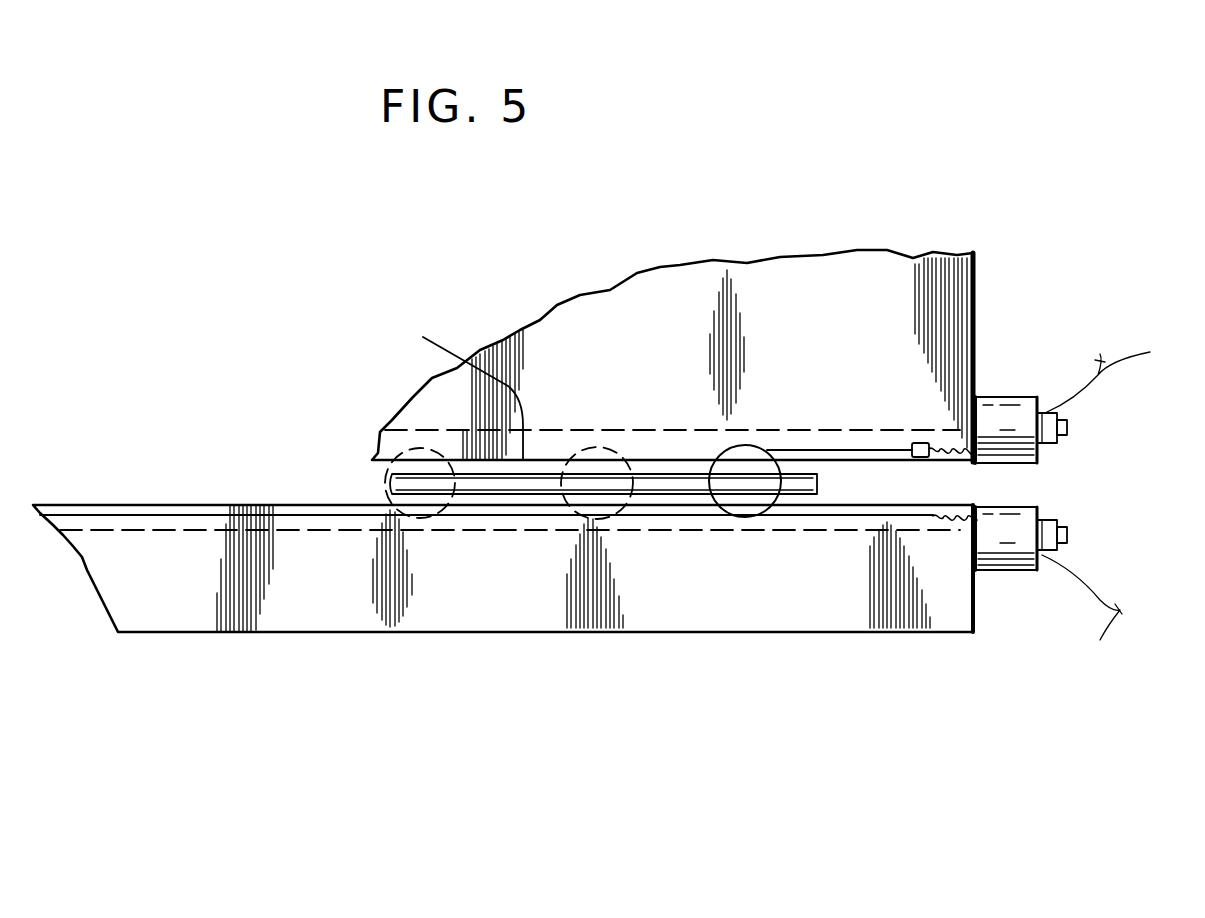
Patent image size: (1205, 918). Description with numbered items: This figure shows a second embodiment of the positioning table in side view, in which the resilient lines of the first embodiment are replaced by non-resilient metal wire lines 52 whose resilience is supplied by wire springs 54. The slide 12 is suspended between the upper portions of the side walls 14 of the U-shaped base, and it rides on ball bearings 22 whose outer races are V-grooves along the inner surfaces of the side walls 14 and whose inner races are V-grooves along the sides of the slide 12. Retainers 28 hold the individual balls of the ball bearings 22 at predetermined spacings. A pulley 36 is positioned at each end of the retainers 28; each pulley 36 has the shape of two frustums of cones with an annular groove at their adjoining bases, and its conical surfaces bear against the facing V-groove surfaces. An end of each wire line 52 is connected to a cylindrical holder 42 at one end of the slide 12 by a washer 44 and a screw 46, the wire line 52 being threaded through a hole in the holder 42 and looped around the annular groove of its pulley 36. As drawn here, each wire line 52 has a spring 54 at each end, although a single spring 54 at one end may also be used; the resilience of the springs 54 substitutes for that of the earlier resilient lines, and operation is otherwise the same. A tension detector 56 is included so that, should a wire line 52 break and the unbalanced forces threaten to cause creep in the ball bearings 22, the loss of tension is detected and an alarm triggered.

The slide 12 is at (977, 320).
The side walls 14 is at (497, 633).
The ball bearings 22 is at (573, 517).
The retainers 28 is at (453, 388).
The pulley 36 is at (723, 515).
The cylindrical holder 42 is at (1008, 397).
The washer 44 is at (1057, 413).
The screw 46 is at (1067, 427).
The non-resilient metal wire line 52 is at (850, 555).
The wire spring 54 is at (953, 513).
The tension detector 56 is at (918, 442).